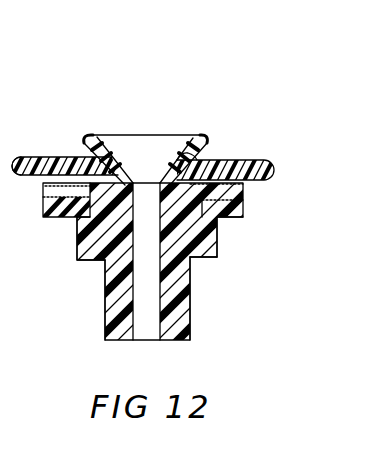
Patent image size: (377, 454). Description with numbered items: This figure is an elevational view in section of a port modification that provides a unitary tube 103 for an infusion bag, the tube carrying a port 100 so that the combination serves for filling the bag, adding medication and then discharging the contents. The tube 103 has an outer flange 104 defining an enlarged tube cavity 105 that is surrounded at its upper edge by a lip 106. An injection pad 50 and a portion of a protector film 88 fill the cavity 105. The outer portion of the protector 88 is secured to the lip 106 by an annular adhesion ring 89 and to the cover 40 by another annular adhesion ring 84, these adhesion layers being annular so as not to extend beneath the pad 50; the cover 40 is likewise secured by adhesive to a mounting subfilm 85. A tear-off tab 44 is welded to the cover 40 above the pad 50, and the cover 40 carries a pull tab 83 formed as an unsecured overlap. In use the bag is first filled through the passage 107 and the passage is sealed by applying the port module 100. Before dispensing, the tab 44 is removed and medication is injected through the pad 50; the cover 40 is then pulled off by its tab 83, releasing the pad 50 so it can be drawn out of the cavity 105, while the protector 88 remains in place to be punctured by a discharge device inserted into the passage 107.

The port 100 is at (223, 133).
The cover 40 is at (62, 164).
The pull tab 83 is at (23, 163).
The tear-off tab 44 is at (146, 150).
The injection pad 50 is at (185, 187).
The annular adhesion ring 84 is at (250, 183).
The annular adhesion ring 89 is at (247, 202).
The lip 106 is at (235, 217).
The outer flange 104 is at (217, 257).
The unitary tube 103 is at (187, 310).
The passage 107 is at (145, 300).
The mounting subfilm 85 is at (103, 264).
The enlarged tube cavity 105 is at (78, 222).
The protector film 88 is at (43, 193).